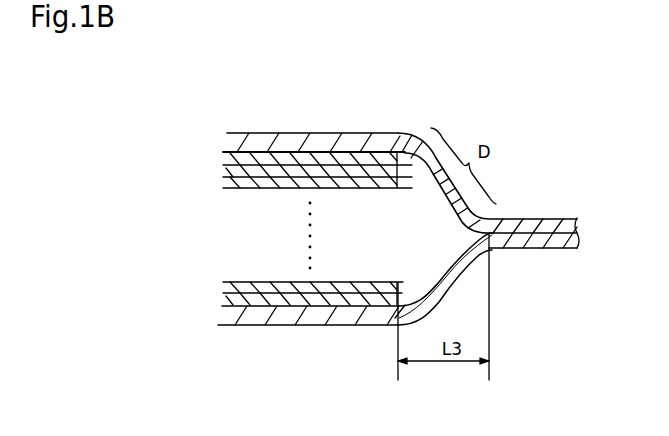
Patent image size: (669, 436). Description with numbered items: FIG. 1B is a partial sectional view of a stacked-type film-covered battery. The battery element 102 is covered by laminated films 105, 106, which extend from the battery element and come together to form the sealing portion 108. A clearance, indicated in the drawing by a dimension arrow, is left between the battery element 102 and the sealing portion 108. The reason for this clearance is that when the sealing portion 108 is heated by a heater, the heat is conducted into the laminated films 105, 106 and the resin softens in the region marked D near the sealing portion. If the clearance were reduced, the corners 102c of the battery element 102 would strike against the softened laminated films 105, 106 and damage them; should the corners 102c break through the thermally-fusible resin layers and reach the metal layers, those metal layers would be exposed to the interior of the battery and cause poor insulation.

The battery element 102 is at (348, 153).
The corners of battery element 102c is at (415, 138).
The laminated film 105 is at (258, 132).
The laminated film 106 is at (309, 326).
The sealing portion 108 is at (492, 262).